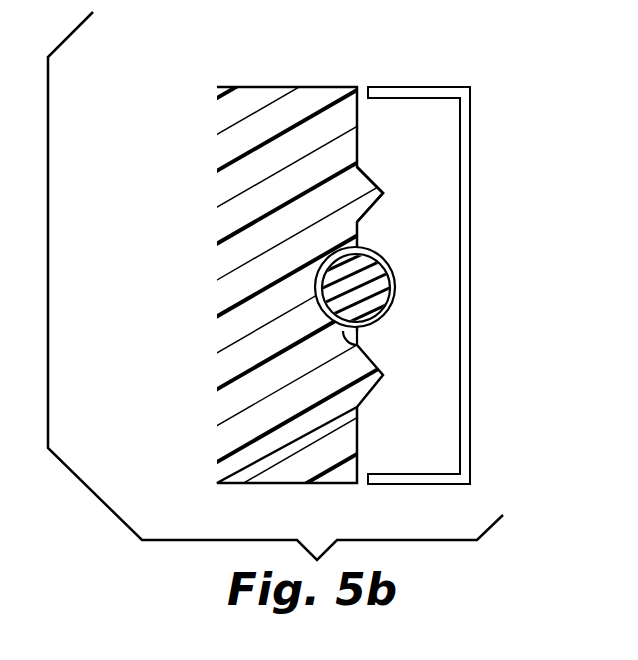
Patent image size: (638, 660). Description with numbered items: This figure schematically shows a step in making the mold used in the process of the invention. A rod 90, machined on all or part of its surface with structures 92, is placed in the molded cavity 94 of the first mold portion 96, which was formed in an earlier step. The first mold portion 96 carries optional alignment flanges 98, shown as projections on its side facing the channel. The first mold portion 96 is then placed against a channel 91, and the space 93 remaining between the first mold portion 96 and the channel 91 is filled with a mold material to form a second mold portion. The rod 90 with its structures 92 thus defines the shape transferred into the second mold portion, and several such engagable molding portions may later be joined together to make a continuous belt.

The rod 90 is at (366, 253).
The channel 91 is at (465, 437).
The structures 92 is at (393, 282).
The space 93 is at (432, 136).
The molded cavity 94 is at (357, 343).
The first mold portion 96 is at (231, 413).
The alignment flanges 98 is at (362, 183).